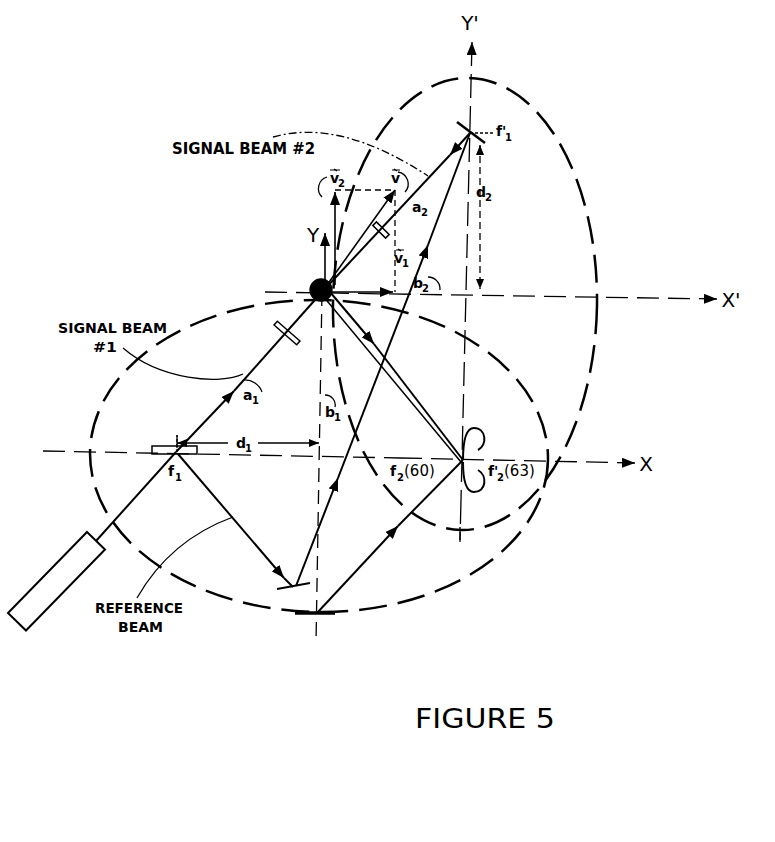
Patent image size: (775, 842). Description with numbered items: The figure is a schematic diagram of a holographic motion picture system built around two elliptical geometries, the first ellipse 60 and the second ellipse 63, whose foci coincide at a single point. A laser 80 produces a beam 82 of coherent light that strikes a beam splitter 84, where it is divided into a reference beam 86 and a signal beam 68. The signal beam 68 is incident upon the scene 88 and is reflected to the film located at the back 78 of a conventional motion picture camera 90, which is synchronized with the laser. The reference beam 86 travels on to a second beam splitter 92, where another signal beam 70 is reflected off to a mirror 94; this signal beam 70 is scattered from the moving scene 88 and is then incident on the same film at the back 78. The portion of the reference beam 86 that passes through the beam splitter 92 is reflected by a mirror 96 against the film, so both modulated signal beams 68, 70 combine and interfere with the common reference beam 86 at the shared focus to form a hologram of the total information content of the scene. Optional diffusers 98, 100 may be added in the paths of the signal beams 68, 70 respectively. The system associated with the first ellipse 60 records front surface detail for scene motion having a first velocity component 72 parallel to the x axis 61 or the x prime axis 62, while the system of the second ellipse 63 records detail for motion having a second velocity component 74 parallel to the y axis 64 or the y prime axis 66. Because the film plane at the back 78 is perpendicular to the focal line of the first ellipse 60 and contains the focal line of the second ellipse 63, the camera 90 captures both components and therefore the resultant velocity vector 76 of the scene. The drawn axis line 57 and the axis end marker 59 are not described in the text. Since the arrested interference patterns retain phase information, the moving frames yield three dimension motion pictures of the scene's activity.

The X axis 57 is at (73, 447).
The Y' axis end tick 59 is at (463, 533).
The ellipse No. 1 60 is at (200, 320).
The x axis 61 is at (585, 462).
The x' axis 62 is at (510, 292).
The ellipse No. 2 63 is at (547, 120).
The y axis 64 is at (317, 470).
The y' axis 66 is at (466, 397).
The signal beam 68 is at (200, 434).
The signal beam 70 is at (402, 405).
The velocity component V1 72 is at (333, 292).
The velocity component V2 74 is at (328, 220).
The resultant velocity vector V 76 is at (383, 178).
The back of motion picture camera 78 is at (472, 456).
The laser 80 is at (72, 546).
The beam 82 is at (150, 482).
The beam splitter 84 is at (173, 437).
The reference beam 86 is at (236, 518).
The scene 88 is at (312, 284).
The motion picture camera 90 is at (485, 435).
The beam splitter 92 is at (290, 596).
The mirror 94 is at (477, 128).
The mirror 96 is at (322, 617).
The diffuser 98 is at (304, 347).
The diffuser 100 is at (390, 230).